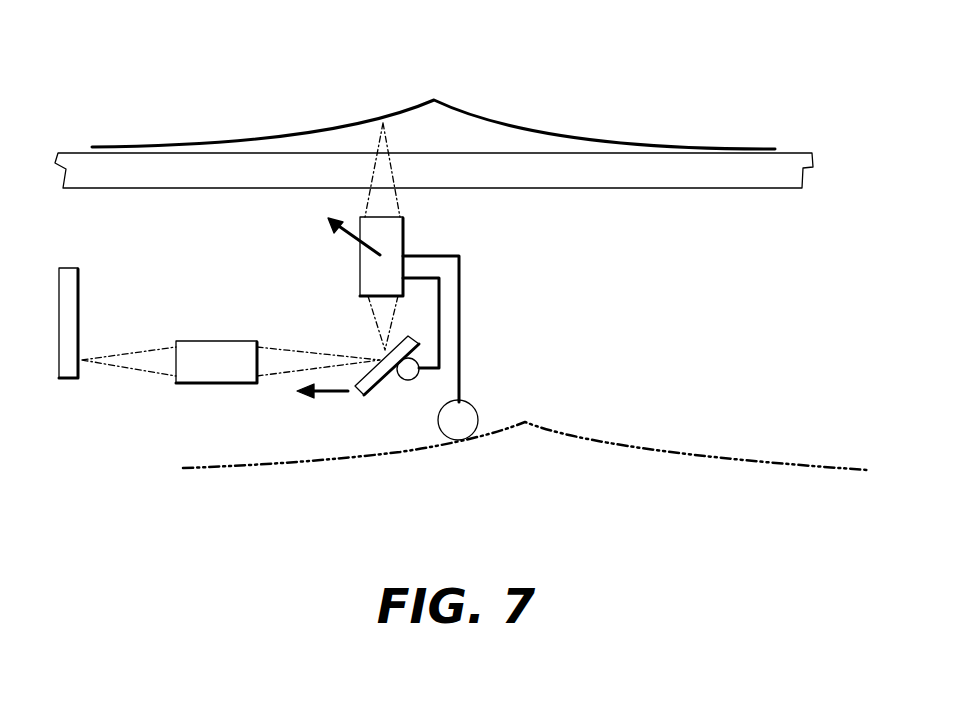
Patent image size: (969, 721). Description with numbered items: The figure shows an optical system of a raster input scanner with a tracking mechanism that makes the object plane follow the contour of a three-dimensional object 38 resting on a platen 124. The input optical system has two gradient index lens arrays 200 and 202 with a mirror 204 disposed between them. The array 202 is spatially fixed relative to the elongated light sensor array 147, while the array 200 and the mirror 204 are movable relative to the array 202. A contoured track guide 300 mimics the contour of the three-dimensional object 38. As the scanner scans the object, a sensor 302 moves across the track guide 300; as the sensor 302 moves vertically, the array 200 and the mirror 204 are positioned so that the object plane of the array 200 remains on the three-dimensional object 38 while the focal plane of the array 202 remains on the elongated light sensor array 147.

The three-dimensional object 38 is at (463, 112).
The platen 124 is at (83, 170).
The elongated light sensor array 147 is at (67, 380).
The gradient index lens array 200 is at (398, 233).
The gradient index lens array 202 is at (215, 345).
The mirror 204 is at (382, 385).
The track guide 300 is at (652, 455).
The sensor 302 is at (475, 413).